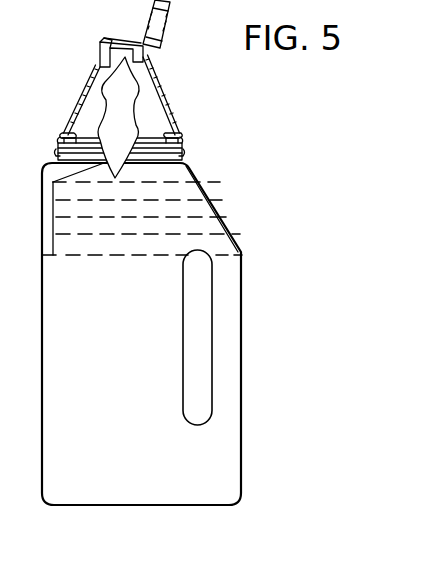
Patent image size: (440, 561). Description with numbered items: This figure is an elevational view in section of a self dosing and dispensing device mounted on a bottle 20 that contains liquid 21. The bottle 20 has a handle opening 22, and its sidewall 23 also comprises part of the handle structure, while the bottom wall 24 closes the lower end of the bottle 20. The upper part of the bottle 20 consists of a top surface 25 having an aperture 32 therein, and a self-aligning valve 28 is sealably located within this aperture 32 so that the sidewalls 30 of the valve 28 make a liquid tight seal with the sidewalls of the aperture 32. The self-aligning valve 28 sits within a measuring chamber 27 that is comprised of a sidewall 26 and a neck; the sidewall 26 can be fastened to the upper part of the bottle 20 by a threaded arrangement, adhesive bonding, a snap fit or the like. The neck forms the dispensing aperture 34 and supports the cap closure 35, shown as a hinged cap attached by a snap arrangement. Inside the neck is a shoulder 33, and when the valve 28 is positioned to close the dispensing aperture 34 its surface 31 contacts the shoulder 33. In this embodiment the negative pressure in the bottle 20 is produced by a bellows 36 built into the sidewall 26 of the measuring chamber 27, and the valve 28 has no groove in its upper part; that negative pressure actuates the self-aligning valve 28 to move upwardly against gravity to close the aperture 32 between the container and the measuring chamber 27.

The bottle 20 is at (226, 222).
The liquid 21 is at (225, 368).
The handle opening 22 is at (198, 298).
The sidewall 23 is at (42, 433).
The bottom wall 24 is at (182, 506).
The top surface 25 is at (56, 153).
The sidewall 26 is at (152, 82).
The measuring chamber 27 is at (95, 108).
The self-aligning valve 28 is at (125, 110).
The sidewalls 30 is at (50, 178).
The surface 31 is at (99, 72).
The aperture 32 is at (183, 152).
The shoulder 33 is at (99, 62).
The dispensing aperture 34 is at (128, 50).
The cap closure 35 is at (168, 32).
The bellows 36 is at (176, 135).